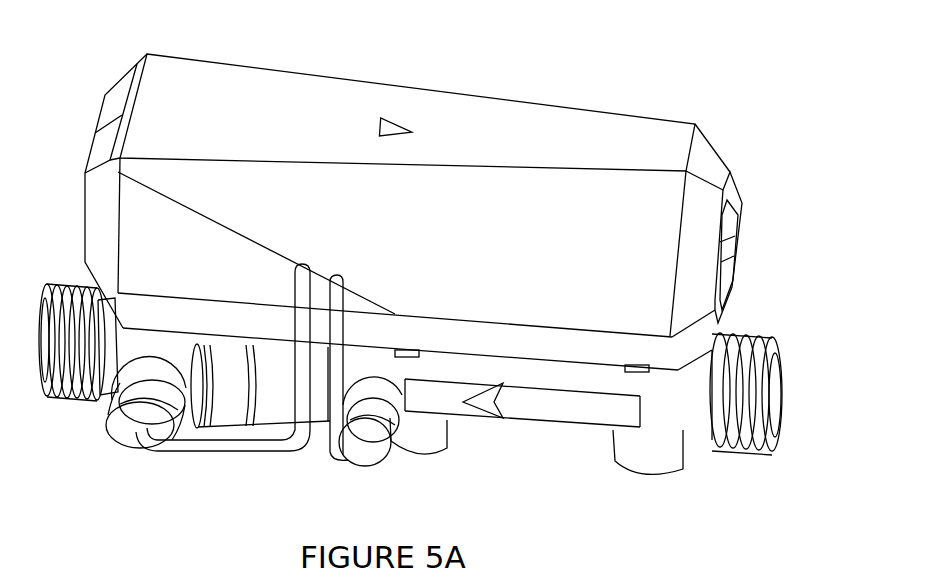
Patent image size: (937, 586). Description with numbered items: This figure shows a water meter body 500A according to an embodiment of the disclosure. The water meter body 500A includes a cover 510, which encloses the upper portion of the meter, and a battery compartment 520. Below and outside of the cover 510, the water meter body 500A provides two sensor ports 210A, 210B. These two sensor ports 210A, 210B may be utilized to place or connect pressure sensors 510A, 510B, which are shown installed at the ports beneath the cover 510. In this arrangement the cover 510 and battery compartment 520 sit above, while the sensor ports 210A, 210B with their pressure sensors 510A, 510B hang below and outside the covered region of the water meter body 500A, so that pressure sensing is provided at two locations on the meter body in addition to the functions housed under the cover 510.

The water meter body 500A is at (420, 257).
The battery compartment 520 is at (466, 117).
The cover 510 is at (752, 265).
The pressure sensor 510A is at (370, 390).
The pressure sensor 510B is at (202, 372).
The sensor port 210A is at (536, 426).
The sensor port 210B is at (69, 358).